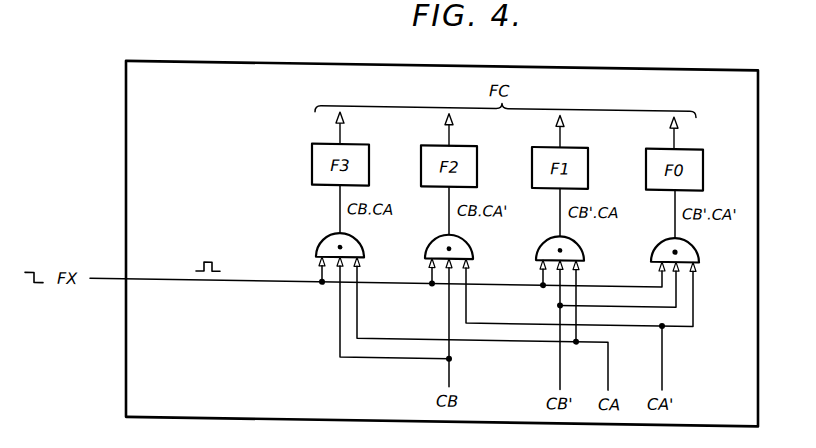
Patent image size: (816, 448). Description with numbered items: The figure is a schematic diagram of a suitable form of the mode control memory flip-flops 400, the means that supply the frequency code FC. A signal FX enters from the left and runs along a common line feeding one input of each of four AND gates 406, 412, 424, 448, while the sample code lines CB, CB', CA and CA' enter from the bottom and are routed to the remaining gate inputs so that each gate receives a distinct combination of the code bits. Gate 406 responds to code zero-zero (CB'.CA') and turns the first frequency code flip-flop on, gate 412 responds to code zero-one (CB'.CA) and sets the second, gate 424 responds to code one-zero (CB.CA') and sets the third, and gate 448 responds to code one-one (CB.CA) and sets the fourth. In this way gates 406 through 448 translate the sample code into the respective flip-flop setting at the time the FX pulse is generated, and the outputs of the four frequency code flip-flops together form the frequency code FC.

The mode control memory flip-flops 400 is at (126, 130).
The gate 448 is at (356, 233).
The gate 424 is at (465, 233).
The gate 412 is at (576, 233).
The gate 406 is at (691, 233).